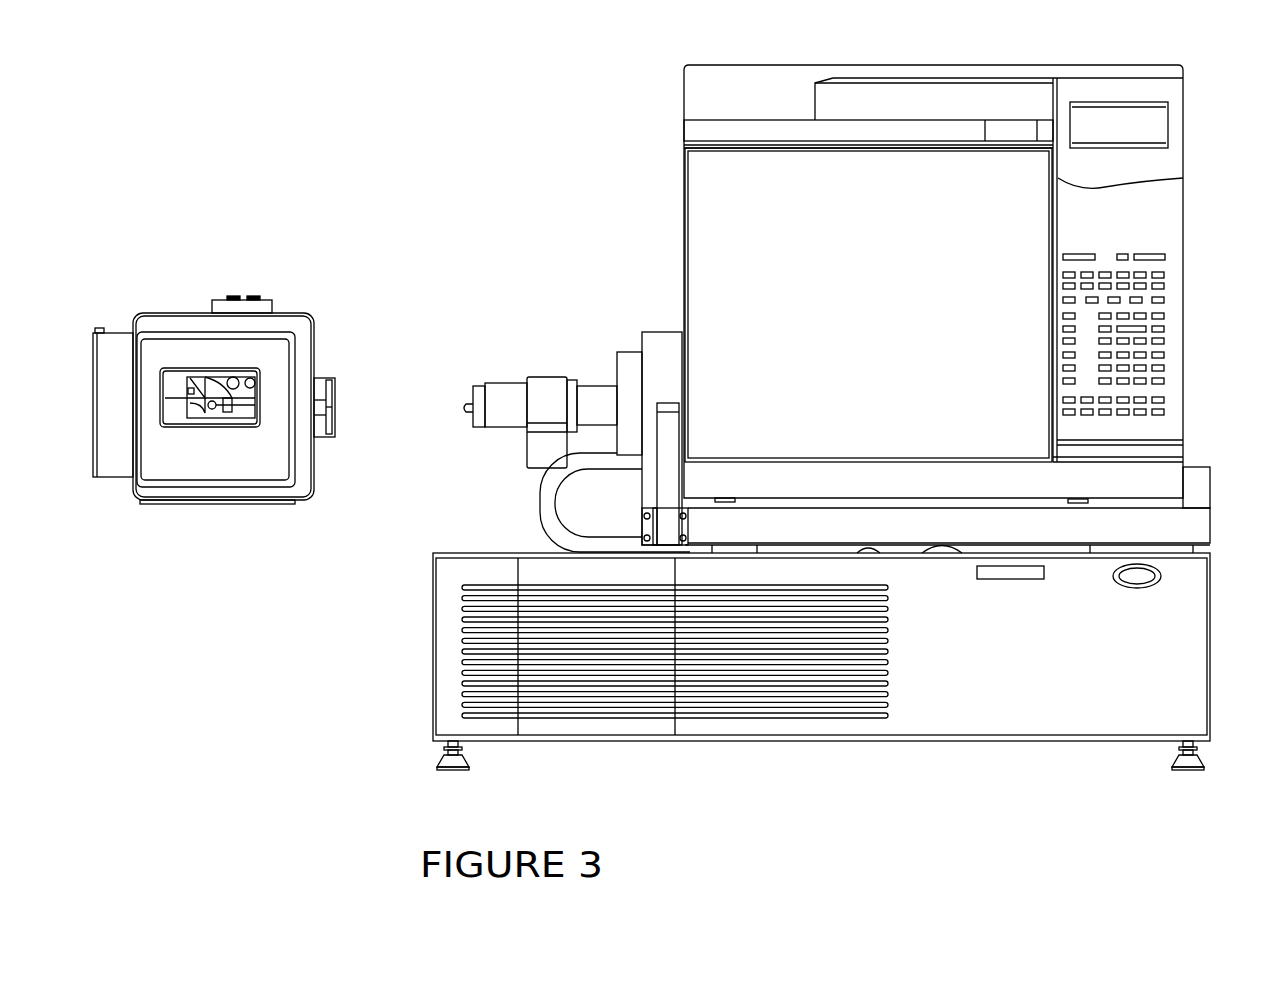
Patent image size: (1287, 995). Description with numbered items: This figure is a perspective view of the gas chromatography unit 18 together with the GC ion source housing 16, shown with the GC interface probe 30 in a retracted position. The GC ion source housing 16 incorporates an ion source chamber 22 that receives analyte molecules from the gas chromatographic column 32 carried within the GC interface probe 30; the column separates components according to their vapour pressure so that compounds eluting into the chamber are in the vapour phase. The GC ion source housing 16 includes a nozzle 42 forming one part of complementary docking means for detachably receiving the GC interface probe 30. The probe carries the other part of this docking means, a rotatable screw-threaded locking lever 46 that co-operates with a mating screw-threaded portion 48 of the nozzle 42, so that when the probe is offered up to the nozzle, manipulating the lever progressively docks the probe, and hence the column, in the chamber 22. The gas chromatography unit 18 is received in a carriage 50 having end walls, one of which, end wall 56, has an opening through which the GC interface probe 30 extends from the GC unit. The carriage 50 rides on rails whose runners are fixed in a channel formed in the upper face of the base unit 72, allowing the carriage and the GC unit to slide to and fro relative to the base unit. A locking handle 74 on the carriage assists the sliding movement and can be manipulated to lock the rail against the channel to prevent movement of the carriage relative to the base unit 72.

The GC ion source housing 16 is at (287, 305).
The gas chromatography unit 18 is at (692, 178).
The ion source chamber 22 is at (240, 413).
The GC interface probe 30 is at (502, 385).
The gas chromatographic column 32 is at (458, 412).
The nozzle 42 is at (338, 398).
The locking lever 46 is at (545, 380).
The screw-threaded portion 48 is at (323, 377).
The carriage 50 is at (1207, 497).
The end wall 56 is at (660, 337).
The base unit 72 is at (1160, 656).
The locking handle 74 is at (668, 480).